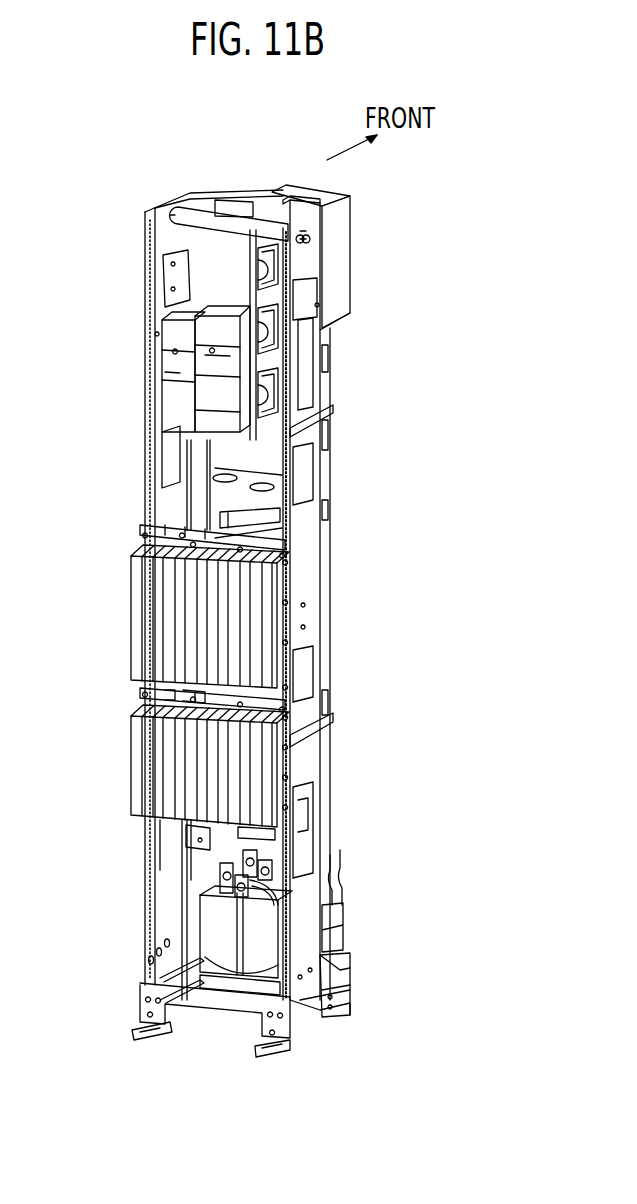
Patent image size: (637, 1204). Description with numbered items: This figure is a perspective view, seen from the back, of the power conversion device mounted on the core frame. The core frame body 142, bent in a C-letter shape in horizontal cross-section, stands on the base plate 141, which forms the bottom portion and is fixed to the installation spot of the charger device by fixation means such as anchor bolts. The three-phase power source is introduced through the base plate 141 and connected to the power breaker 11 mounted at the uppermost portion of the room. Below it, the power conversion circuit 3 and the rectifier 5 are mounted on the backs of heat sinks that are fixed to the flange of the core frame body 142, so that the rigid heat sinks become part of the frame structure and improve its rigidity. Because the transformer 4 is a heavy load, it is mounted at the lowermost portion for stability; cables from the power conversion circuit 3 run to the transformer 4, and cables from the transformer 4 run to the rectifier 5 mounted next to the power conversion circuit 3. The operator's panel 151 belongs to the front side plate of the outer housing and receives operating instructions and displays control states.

The core frame body 142 is at (145, 240).
The power breaker 11 is at (150, 373).
The power conversion circuit 3 is at (128, 531).
The rectifier 5 is at (128, 708).
The transformer 4 is at (208, 926).
The operator's panel 151 is at (340, 262).
The base plate 141 is at (335, 995).